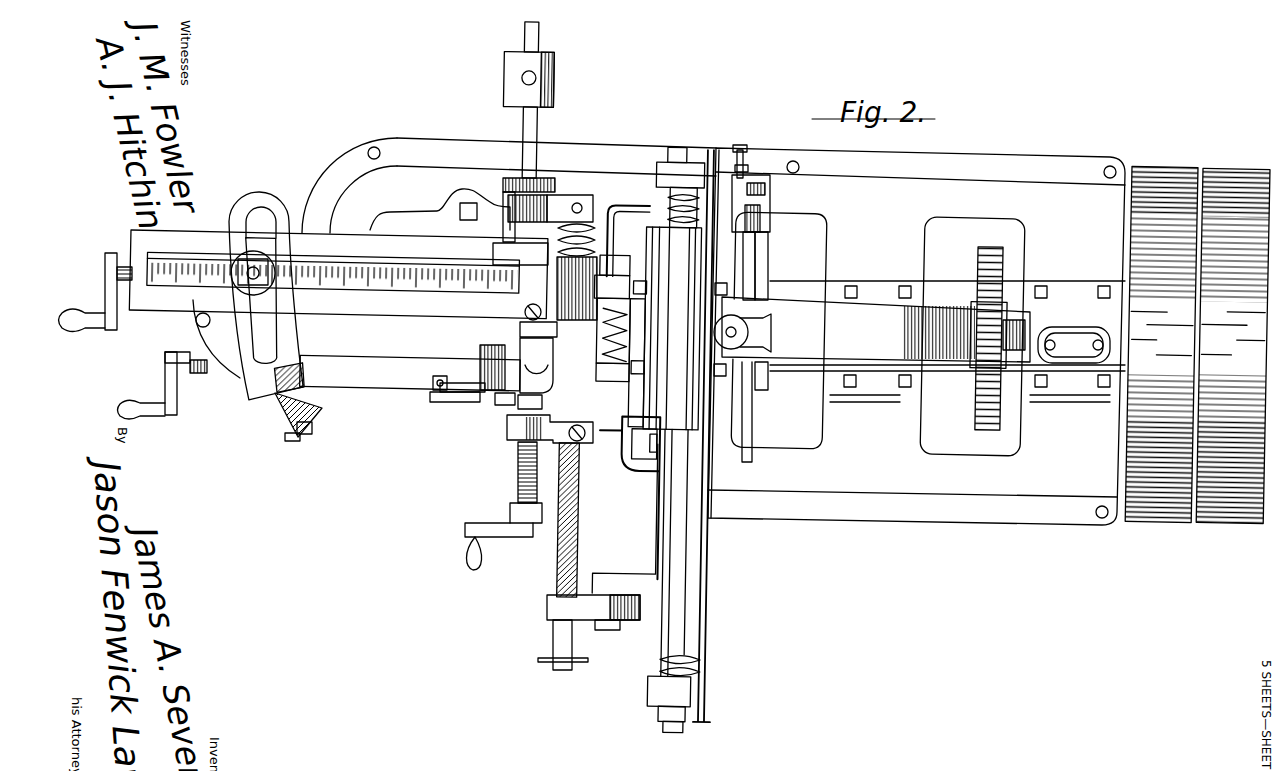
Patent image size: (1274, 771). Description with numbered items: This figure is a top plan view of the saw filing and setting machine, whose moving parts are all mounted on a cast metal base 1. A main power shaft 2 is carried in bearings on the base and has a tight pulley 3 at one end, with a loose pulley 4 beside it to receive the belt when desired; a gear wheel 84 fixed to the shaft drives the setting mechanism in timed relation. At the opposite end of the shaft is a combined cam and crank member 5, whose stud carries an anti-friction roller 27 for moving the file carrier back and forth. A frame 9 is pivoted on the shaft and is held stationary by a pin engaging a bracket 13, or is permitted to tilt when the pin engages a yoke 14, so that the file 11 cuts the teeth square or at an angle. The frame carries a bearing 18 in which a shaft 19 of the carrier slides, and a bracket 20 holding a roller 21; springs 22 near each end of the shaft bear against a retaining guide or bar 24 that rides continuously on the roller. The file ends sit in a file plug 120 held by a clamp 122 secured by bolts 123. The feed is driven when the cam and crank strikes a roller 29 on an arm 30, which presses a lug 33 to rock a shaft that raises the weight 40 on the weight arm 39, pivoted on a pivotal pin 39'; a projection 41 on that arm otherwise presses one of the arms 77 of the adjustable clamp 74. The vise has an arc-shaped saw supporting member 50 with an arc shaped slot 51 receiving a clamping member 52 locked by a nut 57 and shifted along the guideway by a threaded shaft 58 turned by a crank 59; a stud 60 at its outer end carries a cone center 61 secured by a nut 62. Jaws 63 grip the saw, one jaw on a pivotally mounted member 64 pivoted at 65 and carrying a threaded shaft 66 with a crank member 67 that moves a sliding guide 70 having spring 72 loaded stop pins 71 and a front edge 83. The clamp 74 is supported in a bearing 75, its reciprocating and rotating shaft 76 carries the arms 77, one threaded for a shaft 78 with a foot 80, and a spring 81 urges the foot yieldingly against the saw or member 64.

The base 1 is at (845, 515).
The main power shaft 2 is at (1008, 400).
The tight pulley 3 is at (1233, 345).
The loose pulley 4 is at (1161, 344).
The combined cam and crank member 5 is at (755, 264).
The frame 9 is at (876, 329).
The file 11 is at (575, 528).
The bracket 13 is at (832, 397).
The yoke 14 is at (768, 283).
The bearing 18 is at (647, 305).
The shaft 19 is at (678, 633).
The bracket 20 is at (760, 337).
The roller 21 is at (738, 318).
The springs 22 is at (685, 190).
The retaining guide or bar 24 is at (706, 571).
The anti-friction roller 27 is at (730, 455).
The roller 29 is at (768, 192).
The arm 30 is at (773, 212).
The lug 33 is at (740, 180).
The weight arm 39 is at (551, 100).
The pivotal pin 39' is at (514, 191).
The weight 40 is at (555, 75).
The projection 41 is at (528, 231).
The saw supporting member 50 is at (242, 212).
The arc shaped slot 51 is at (262, 210).
The clamping member 52 is at (240, 246).
The nut 57 is at (222, 297).
The threaded shaft 58 is at (293, 233).
The crank 59 is at (112, 295).
The threaded extension or stud 60 is at (297, 435).
The cone center 61 is at (268, 414).
The nut 62 is at (313, 424).
The jaws 63 is at (522, 332).
The pivotally mounted member 64 is at (352, 358).
The pivot 65 is at (200, 323).
The threaded shaft 66 is at (210, 377).
The crank member 67 is at (155, 420).
The sliding guide 70 is at (458, 403).
The stop pins 71 is at (493, 332).
The spring 72 is at (452, 383).
The adjustable clamp 74 is at (588, 444).
The bearing 75 is at (570, 283).
The reciprocating and rotating shaft 76 is at (585, 395).
The arms 77 is at (572, 195).
The threaded shaft 78 is at (621, 518).
The foot 80 is at (505, 400).
The spring 81 is at (595, 235).
The front edge 83 is at (510, 366).
The gear wheel 84 is at (997, 266).
The file plug 120 is at (574, 645).
The clamp 122 is at (552, 606).
The bolts 123 is at (662, 665).